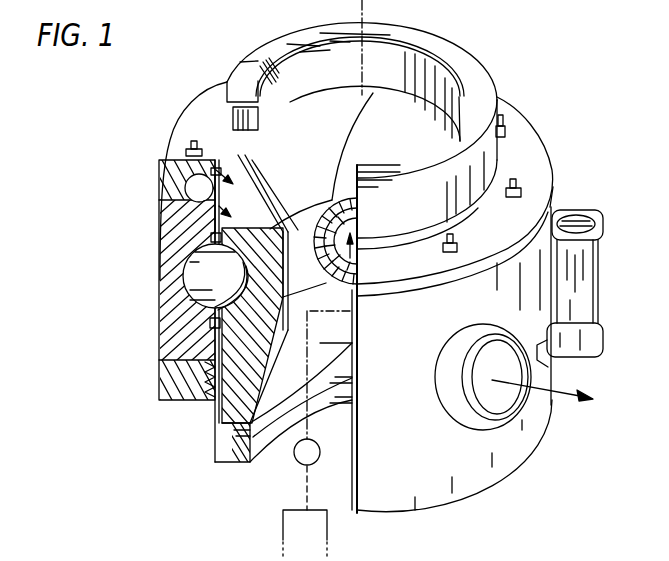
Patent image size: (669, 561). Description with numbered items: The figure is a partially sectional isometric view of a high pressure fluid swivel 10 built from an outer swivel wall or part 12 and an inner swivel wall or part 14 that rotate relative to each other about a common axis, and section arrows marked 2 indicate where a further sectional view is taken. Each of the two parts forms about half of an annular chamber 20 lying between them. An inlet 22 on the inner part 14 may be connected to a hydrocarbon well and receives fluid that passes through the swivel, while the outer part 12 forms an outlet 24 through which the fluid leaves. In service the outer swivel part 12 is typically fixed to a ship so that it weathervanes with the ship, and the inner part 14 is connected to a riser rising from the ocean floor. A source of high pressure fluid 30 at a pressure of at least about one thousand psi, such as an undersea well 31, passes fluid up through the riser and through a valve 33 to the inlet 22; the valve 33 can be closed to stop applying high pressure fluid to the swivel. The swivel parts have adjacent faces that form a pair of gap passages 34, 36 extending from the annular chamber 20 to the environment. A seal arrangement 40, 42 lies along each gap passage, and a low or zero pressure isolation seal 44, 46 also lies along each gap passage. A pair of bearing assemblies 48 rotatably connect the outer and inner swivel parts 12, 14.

The high pressure fluid swivel 10 is at (530, 58).
The outer swivel wall or part 12 is at (177, 413).
The inner swivel wall or part 14 is at (227, 472).
The annular chamber 20 is at (197, 286).
The inlet 22 is at (373, 93).
The outlet 24 is at (505, 418).
The source of high pressure fluid 30 is at (215, 276).
The undersea well 31 is at (283, 519).
The valve 33 is at (282, 470).
The gap passage 34 is at (213, 228).
The gap passage 36 is at (216, 343).
The seal arrangement 40 is at (190, 183).
The seal arrangement 42 is at (200, 380).
The isolation seal 44 is at (210, 240).
The isolation seal 46 is at (212, 323).
The bearing assemblies 48 is at (218, 163).
The section line 2- 2 is at (231, 197).